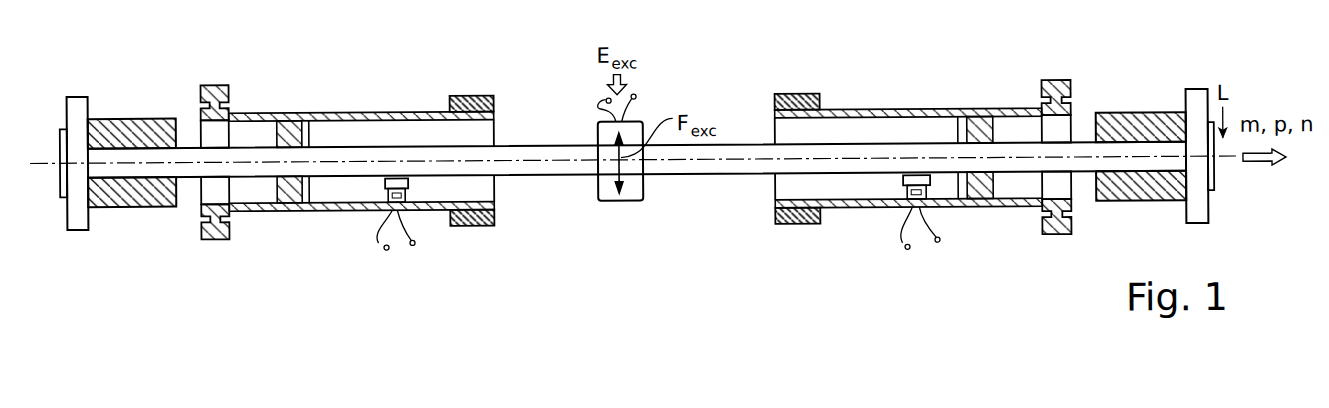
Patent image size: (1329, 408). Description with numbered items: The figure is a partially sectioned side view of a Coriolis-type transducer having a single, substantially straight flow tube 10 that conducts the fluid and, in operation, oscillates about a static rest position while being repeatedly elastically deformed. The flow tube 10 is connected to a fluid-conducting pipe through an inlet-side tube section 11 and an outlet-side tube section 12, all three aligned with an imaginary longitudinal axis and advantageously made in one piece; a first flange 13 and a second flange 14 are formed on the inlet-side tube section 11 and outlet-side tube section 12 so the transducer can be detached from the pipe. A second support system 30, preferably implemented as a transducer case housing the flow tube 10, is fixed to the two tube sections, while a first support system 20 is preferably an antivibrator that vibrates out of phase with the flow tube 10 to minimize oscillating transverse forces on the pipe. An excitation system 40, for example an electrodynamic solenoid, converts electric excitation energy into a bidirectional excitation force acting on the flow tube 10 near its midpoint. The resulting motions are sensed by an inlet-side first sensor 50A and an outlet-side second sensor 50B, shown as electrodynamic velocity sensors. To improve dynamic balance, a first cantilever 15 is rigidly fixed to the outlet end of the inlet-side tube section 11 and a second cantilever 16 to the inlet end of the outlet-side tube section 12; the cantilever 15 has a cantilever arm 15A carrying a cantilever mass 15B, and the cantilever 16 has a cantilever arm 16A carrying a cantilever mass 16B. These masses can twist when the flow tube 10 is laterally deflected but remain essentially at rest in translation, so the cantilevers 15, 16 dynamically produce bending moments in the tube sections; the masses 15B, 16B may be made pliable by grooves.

The flow tube 10 is at (542, 155).
The inlet-side tube section 11 is at (210, 161).
The outlet-side tube section 12 is at (1058, 157).
The first flange 13 is at (78, 113).
The second flange 14 is at (1193, 107).
The first cantilever 15 is at (190, 215).
The cantilever arm 15A is at (270, 214).
The cantilever mass 15B is at (212, 243).
The second cantilever 16 is at (1082, 210).
The cantilever arm 16A is at (977, 214).
The cantilever mass 16B is at (1058, 243).
The first support system 20 is at (372, 284).
The second support system 30 is at (126, 90).
The excitation system 40 is at (668, 199).
The first sensor 50A is at (372, 195).
The second sensor 50B is at (884, 220).